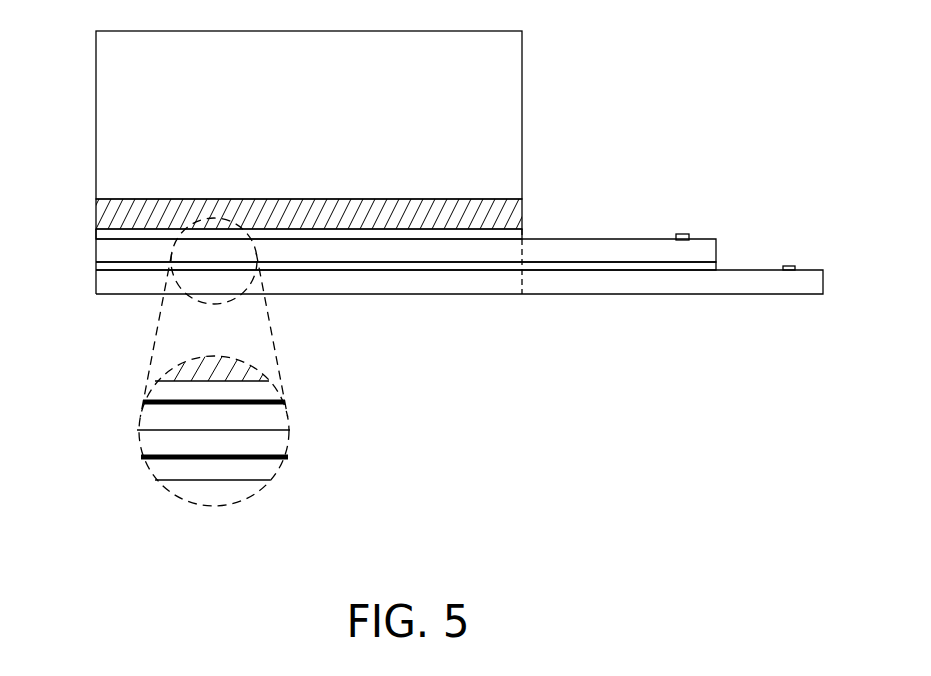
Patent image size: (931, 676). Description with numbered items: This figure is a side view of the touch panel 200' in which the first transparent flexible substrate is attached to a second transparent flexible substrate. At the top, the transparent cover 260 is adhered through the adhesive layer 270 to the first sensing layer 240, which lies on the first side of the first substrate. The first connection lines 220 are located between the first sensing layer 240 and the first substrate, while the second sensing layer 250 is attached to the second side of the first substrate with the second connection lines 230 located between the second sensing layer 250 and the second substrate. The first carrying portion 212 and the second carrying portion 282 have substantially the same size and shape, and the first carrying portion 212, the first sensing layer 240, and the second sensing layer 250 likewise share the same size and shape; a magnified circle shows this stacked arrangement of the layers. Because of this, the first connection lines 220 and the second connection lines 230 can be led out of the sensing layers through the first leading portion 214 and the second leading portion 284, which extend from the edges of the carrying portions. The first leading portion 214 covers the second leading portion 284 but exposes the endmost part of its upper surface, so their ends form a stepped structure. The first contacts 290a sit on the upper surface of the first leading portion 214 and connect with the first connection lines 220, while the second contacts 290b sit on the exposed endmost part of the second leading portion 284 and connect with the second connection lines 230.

The touch panel 200' is at (430, 262).
The transparent cover 260 is at (115, 111).
The adhesive layer 270 is at (118, 211).
The first connection lines 220 is at (283, 402).
The first carrying portion 212 is at (464, 255).
The first leading portion 214 is at (558, 255).
The second carrying portion 282 is at (407, 285).
The second leading portion 284 is at (640, 285).
The first contacts 290a is at (680, 234).
The second contacts 290b is at (789, 266).
The first sensing layer 240 is at (150, 393).
The second sensing layer 250 is at (150, 441).
The second connection lines 230 is at (283, 458).